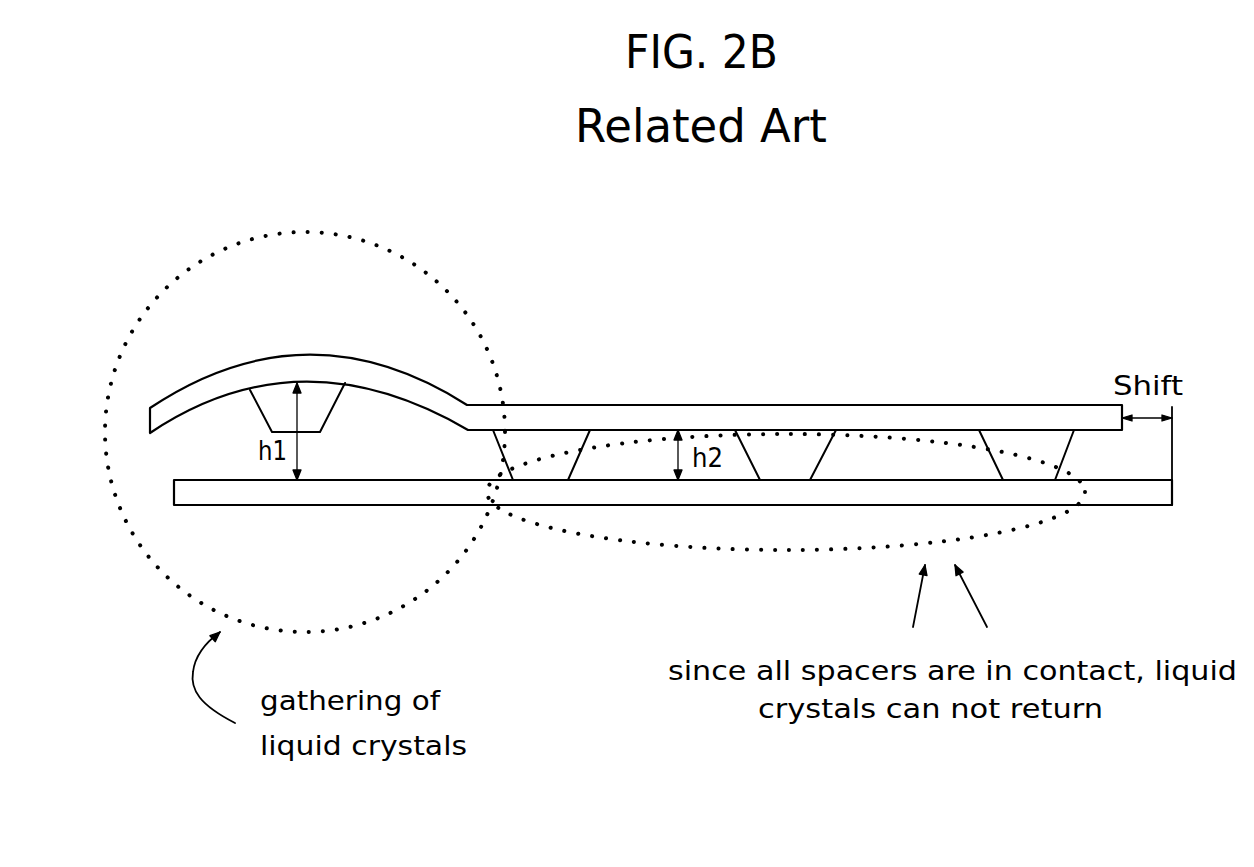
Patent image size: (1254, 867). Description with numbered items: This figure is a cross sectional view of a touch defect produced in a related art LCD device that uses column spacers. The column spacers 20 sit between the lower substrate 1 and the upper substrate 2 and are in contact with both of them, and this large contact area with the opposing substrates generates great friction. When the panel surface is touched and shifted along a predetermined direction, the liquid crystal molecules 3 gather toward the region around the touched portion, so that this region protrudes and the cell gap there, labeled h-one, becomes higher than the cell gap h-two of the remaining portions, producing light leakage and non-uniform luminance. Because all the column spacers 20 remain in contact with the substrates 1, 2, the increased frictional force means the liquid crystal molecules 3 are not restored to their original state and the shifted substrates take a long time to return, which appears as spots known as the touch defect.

The lower substrate 1 is at (1142, 495).
The upper substrate 2 is at (847, 410).
The liquid crystal molecules 3 is at (923, 450).
The column spacer 20 is at (1010, 463).